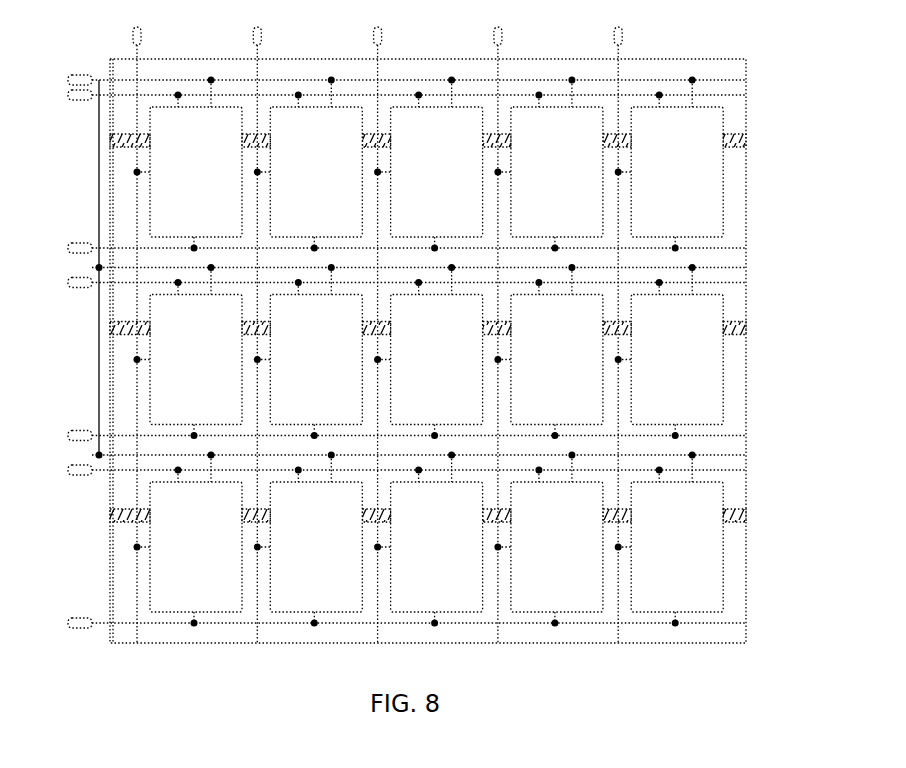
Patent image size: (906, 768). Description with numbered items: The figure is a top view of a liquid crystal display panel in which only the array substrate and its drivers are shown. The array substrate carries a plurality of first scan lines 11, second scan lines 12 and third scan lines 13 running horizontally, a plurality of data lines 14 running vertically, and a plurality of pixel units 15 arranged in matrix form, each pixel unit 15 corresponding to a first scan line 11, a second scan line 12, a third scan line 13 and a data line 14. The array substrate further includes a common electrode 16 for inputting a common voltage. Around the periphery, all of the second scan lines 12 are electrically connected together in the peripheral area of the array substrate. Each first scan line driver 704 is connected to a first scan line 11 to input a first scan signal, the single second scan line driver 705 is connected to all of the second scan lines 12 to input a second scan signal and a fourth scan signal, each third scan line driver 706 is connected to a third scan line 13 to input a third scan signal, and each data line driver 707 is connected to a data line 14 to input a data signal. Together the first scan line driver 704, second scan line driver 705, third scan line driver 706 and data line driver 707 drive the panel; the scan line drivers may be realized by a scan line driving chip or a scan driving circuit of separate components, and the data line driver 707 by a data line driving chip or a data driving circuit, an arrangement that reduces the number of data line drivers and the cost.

The first scan line 11 is at (740, 96).
The second scan line 12 is at (740, 80).
The third scan line 13 is at (740, 247).
The data line 14 is at (621, 57).
The pixel unit 15 is at (723, 200).
The common electrode 16 is at (735, 140).
The first scan line driver 704 is at (82, 100).
The second scan line driver 705 is at (80, 74).
The third scan line driver 706 is at (80, 242).
The data line driver 707 is at (141, 28).